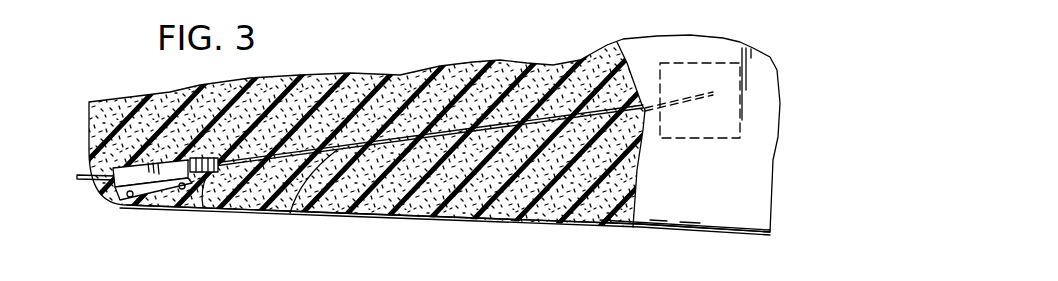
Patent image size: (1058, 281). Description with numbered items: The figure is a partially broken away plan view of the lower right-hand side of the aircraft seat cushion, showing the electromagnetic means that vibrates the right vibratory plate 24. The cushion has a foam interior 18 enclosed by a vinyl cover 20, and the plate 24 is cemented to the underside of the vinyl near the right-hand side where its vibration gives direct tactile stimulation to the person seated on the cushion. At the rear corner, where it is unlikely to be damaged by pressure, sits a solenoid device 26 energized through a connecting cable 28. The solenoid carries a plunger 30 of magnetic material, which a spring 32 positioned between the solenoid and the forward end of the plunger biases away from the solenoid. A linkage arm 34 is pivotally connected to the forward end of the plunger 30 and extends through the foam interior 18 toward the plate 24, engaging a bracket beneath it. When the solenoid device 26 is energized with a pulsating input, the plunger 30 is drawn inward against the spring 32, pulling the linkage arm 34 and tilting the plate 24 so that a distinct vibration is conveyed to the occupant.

The foam interior 18 is at (508, 72).
The vinyl cover 20 is at (762, 152).
The right vibratory plate 24 is at (720, 62).
The solenoid device 26 is at (116, 197).
The connecting cable 28 is at (78, 181).
The plunger 30 is at (218, 174).
The spring 32 is at (203, 203).
The linkage arm 34 is at (287, 216).